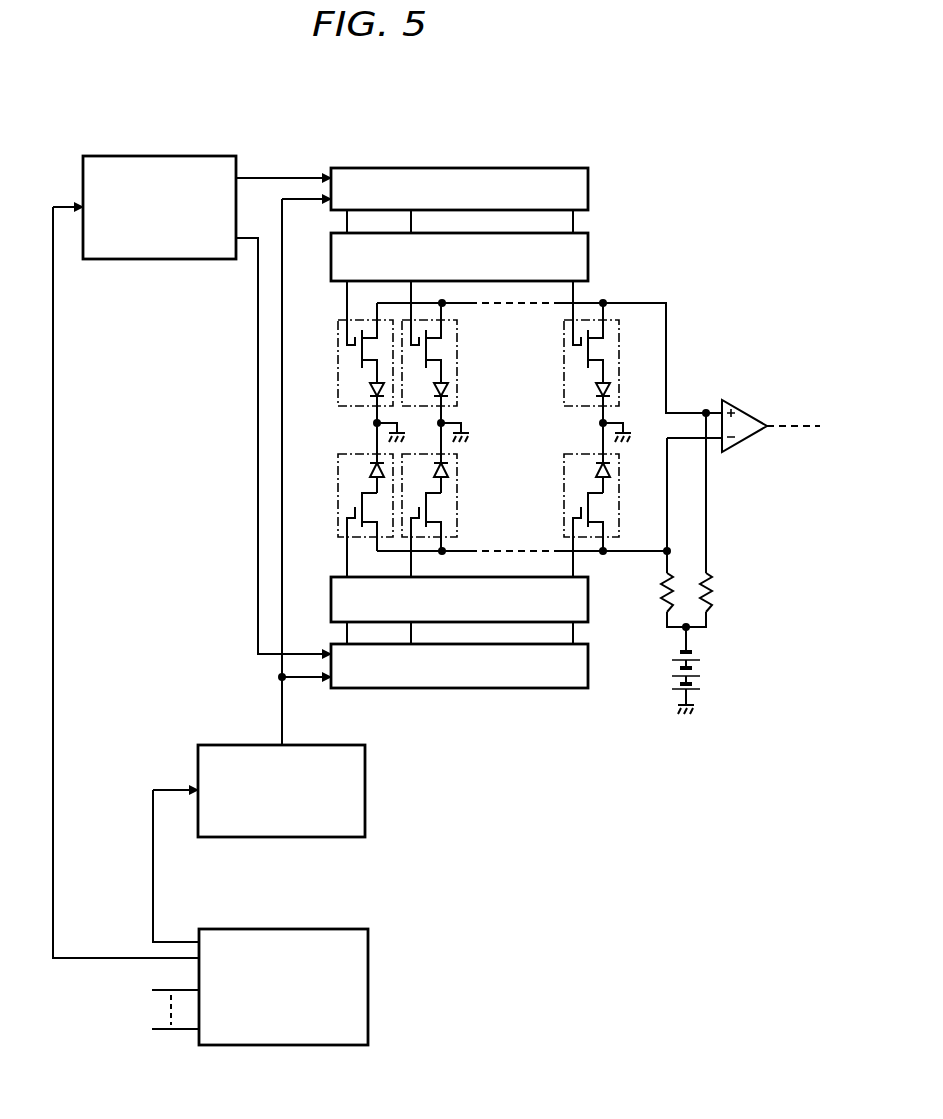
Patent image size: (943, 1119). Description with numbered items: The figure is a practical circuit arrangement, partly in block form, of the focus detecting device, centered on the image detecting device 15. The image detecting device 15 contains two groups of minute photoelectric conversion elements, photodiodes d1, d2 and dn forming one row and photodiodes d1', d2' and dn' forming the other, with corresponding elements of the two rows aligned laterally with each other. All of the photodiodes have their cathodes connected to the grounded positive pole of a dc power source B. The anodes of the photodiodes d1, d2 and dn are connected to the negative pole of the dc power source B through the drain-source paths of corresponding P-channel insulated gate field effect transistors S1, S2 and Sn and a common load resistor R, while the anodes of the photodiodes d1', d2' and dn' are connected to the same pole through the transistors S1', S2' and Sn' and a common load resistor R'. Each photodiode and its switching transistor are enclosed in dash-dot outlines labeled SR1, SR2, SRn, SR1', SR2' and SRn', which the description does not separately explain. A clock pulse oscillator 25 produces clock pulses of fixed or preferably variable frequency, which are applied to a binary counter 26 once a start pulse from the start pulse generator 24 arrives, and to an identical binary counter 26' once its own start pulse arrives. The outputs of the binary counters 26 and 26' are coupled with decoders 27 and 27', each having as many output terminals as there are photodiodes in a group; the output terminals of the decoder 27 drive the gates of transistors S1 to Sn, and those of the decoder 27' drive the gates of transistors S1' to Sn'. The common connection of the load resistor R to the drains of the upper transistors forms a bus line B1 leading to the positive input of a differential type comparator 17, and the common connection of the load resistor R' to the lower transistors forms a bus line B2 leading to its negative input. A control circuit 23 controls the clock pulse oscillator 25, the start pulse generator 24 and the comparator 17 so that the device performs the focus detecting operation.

The image detecting device 15 is at (586, 102).
The differential type comparator 17 is at (748, 412).
The control circuit 23 is at (368, 984).
The start pulse generator 24 is at (205, 157).
The clock pulse oscillator 25 is at (365, 805).
The binary counter 26 is at (459, 167).
The binary counter 26' is at (459, 683).
The decoder 27 is at (484, 257).
The decoder 27' is at (484, 612).
The switching circuit SR1 is at (339, 351).
The switching circuit SR2 is at (456, 355).
The switching circuit SRn is at (622, 339).
The switching circuit SR1' is at (343, 495).
The switching circuit SR2' is at (472, 499).
The switching circuit SRn' is at (567, 495).
The electrical switching element S1 is at (336, 332).
The electrical switching element S2 is at (457, 332).
The electrical switching element Sn is at (563, 332).
The P-channel IGFET S1' is at (336, 534).
The P-channel IGFET S2' is at (458, 534).
The P-channel IGFET Sn' is at (614, 534).
The photoelectric conversion element d1 is at (338, 399).
The photoelectric conversion element d2 is at (467, 399).
The photoelectric conversion element dn is at (569, 399).
The photoelectric conversion element d1' is at (338, 458).
The photoelectric conversion element d2' is at (470, 458).
The photoelectric conversion element dn' is at (567, 458).
The output bus line B1 is at (681, 358).
The output bus line B2 is at (682, 494).
The common load resistor R is at (717, 592).
The common load resistor R' is at (652, 592).
The dc power source B is at (702, 668).